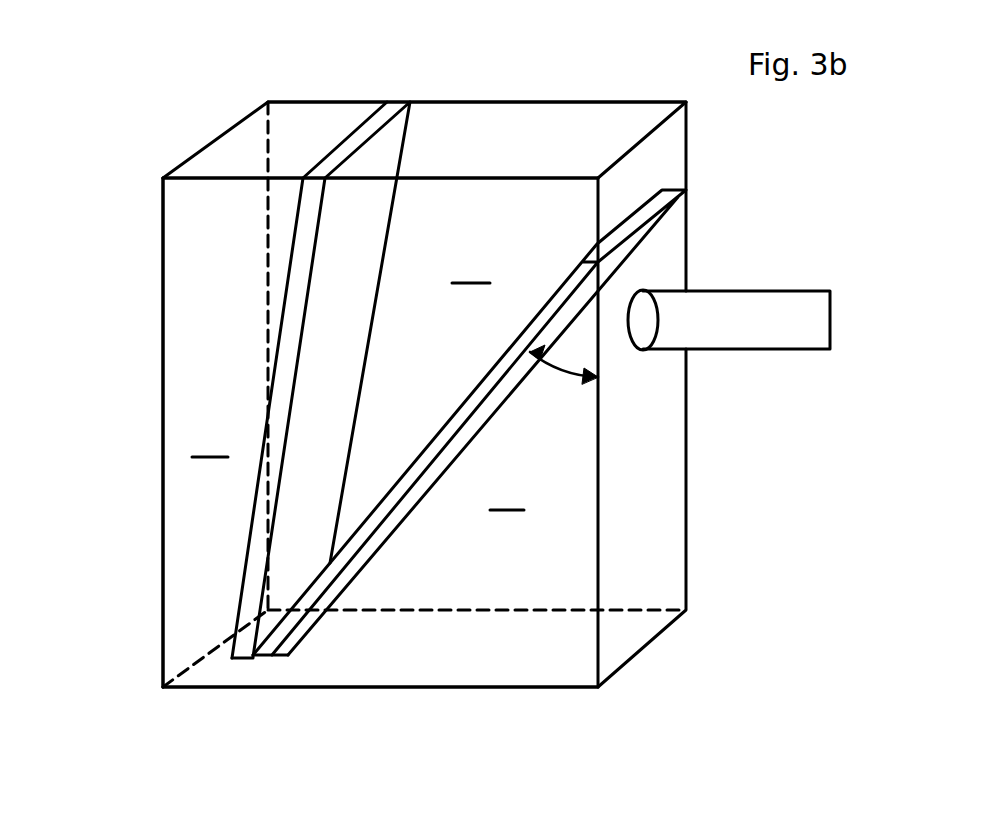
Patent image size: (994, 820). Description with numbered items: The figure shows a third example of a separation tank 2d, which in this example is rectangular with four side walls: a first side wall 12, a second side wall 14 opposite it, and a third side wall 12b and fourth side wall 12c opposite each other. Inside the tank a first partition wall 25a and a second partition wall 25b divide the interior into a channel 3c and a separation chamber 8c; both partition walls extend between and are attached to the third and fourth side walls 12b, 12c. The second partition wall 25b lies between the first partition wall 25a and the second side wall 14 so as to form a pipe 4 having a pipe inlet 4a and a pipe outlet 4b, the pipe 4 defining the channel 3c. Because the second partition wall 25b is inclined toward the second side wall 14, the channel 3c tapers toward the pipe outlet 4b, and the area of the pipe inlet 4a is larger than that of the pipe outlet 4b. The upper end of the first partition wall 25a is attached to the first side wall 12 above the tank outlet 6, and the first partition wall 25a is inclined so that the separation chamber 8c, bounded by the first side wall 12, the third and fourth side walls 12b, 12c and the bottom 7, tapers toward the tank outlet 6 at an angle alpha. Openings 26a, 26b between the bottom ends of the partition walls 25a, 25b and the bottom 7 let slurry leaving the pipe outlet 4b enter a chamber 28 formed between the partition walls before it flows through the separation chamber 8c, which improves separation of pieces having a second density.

The separation tank 2d is at (128, 279).
The pipe 4 is at (182, 230).
The pipe inlet 4a is at (257, 158).
The pipe outlet 4b is at (218, 670).
The tank outlet 6 is at (640, 308).
The bottom 7 is at (417, 662).
The first side wall 12 is at (665, 522).
The third side wall 12b is at (504, 100).
The fourth side wall 12c is at (460, 178).
The second side wall 14 is at (163, 383).
The first partition wall 25a is at (551, 295).
The second partition wall 25b is at (338, 145).
The opening 26a is at (240, 673).
The opening 26b is at (263, 662).
The chamber 28 is at (471, 268).
The channel 3c is at (210, 441).
The separation chamber 8c is at (508, 495).